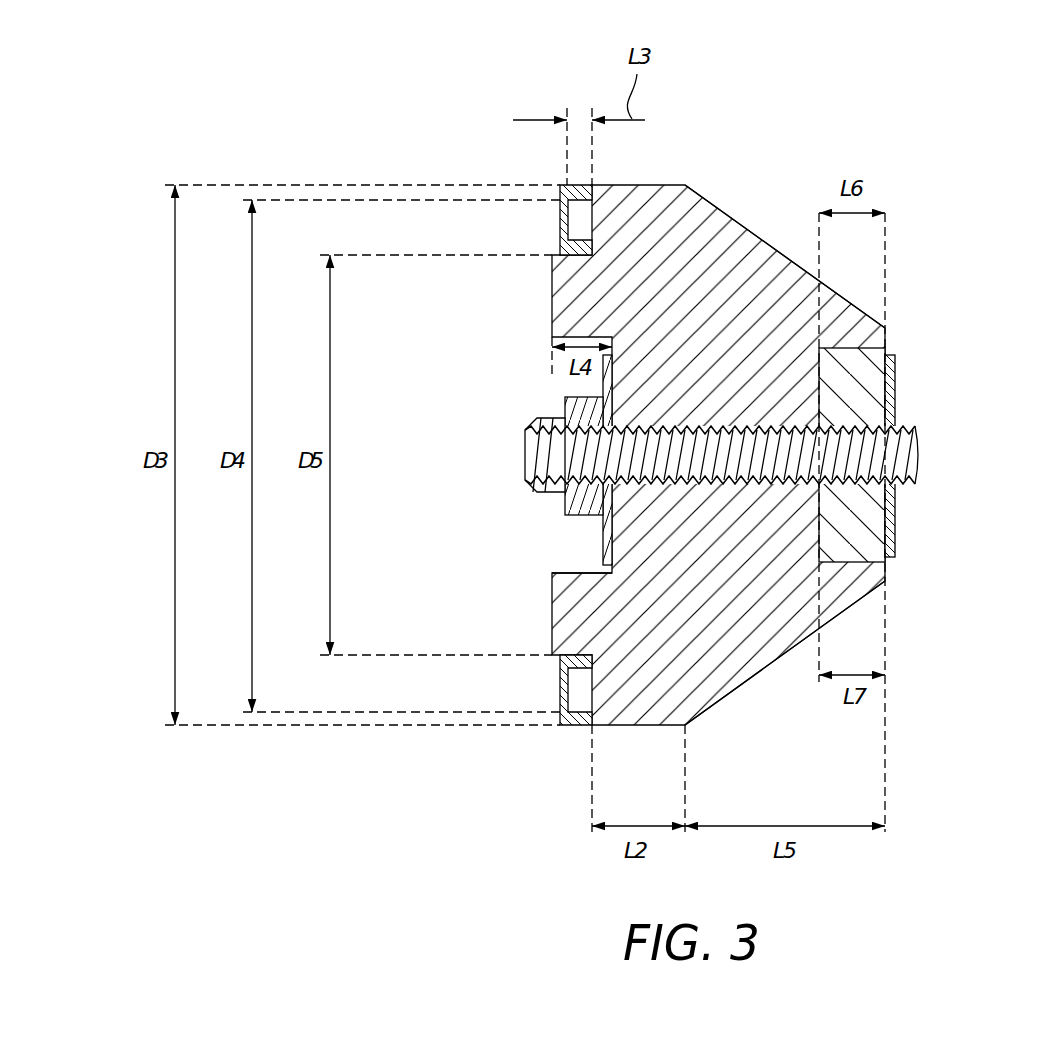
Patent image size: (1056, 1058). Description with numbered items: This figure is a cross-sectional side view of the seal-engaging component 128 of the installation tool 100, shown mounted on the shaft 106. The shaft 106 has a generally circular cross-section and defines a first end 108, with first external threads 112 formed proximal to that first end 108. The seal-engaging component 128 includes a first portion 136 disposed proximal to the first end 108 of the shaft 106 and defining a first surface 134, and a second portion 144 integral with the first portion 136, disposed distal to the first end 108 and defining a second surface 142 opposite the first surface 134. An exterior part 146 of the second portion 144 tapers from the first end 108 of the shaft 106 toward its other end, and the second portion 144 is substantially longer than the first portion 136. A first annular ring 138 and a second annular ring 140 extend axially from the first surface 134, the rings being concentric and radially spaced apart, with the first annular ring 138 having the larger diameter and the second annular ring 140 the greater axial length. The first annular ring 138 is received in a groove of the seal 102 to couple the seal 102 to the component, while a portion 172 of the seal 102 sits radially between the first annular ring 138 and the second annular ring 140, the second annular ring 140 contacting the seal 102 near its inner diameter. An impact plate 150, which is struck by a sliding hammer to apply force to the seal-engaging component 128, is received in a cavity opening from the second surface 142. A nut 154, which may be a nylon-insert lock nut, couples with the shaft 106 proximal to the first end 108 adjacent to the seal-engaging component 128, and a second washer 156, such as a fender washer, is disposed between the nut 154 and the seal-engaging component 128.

The installation tool 100 is at (938, 157).
The seal 102 is at (557, 189).
The shaft 106 is at (711, 478).
The first end 108 is at (521, 485).
The first external threads 112 is at (913, 431).
The seal-engaging component 128 is at (900, 296).
The first surface 134 is at (609, 571).
The first portion 136 is at (648, 177).
The first annular ring 138 is at (561, 222).
The second annular ring 140 is at (566, 293).
The second surface 142 is at (886, 331).
The second portion 144 is at (768, 684).
The exterior part 146 is at (779, 253).
The impact plate 150 is at (880, 496).
The nut 154 is at (548, 421).
The second washer 156 is at (602, 525).
The portion 172 is at (561, 248).